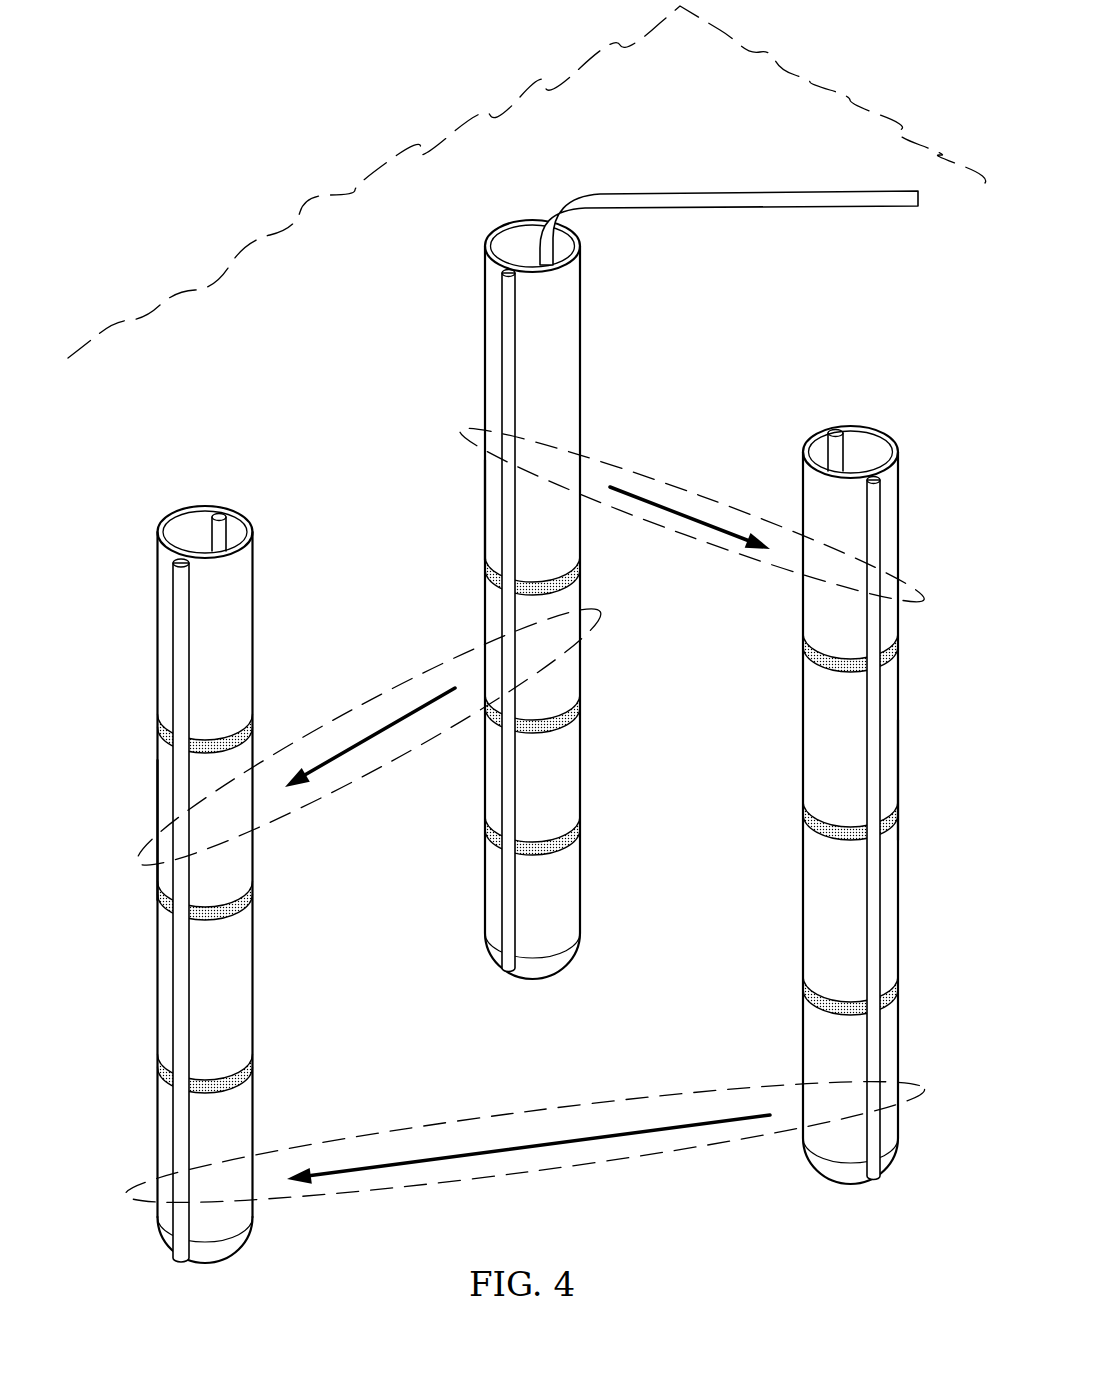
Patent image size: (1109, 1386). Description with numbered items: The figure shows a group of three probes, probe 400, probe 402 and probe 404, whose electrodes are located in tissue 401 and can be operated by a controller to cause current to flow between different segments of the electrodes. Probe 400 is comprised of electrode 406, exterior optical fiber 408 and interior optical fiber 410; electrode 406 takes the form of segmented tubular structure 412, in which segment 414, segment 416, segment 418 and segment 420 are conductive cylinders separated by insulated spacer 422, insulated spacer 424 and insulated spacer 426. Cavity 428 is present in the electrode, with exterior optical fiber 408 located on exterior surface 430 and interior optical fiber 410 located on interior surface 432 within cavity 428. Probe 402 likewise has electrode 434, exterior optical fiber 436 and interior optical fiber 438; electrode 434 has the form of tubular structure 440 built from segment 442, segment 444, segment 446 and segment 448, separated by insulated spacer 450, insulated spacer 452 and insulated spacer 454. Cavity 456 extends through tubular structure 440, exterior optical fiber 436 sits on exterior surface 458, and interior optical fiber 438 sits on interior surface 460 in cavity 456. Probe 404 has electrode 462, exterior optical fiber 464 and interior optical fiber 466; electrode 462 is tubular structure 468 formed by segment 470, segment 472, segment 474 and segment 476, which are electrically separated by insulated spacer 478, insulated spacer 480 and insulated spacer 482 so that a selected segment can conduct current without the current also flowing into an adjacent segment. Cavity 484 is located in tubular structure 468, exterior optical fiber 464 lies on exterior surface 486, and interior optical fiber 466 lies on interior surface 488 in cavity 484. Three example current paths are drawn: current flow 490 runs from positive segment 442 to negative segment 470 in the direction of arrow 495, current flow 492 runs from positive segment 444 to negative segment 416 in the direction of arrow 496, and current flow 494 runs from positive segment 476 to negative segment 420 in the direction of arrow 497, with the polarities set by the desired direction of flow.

The probe 400 is at (197, 845).
The tissue 401 is at (305, 218).
The probe 402 is at (658, 557).
The probe 404 is at (852, 763).
The electrode 406 is at (150, 986).
The exterior optical fiber 408 is at (180, 634).
The interior optical fiber 410 is at (218, 514).
The tubular structure 412 is at (165, 823).
The segment 414 is at (236, 682).
The segment 416 is at (236, 880).
The segment 418 is at (236, 1004).
The segment 420 is at (236, 1134).
The insulated spacer 422 is at (165, 755).
The insulated spacer 424 is at (238, 933).
The insulated spacer 426 is at (238, 1100).
The cavity 428 is at (194, 526).
The exterior surface 430 is at (245, 635).
The interior surface 432 is at (173, 535).
The electrode 434 is at (474, 504).
The exterior optical fiber 436 is at (507, 340).
The interior optical fiber 438 is at (625, 190).
The tubular structure 440 is at (500, 385).
The segment 442 is at (561, 396).
The segment 444 is at (563, 684).
The segment 446 is at (561, 787).
The segment 448 is at (561, 909).
The insulated spacer 450 is at (497, 592).
The insulated spacer 452 is at (558, 735).
The insulated spacer 454 is at (555, 858).
The cavity 456 is at (525, 240).
The exterior surface 458 is at (575, 340).
The interior surface 460 is at (492, 235).
The electrode 462 is at (908, 779).
The exterior optical fiber 464 is at (890, 547).
The interior optical fiber 466 is at (838, 433).
The tubular structure 468 is at (898, 710).
The segment 470 is at (822, 495).
The segment 472 is at (822, 746).
The segment 474 is at (822, 922).
The segment 476 is at (822, 1056).
The insulated spacer 478 is at (830, 678).
The insulated spacer 480 is at (830, 851).
The insulated spacer 482 is at (832, 1018).
The cavity 484 is at (860, 440).
The exterior surface 486 is at (810, 627).
The interior surface 488 is at (890, 445).
The current flow 490 is at (637, 465).
The current flow 492 is at (352, 790).
The current flow 494 is at (603, 1172).
The arrow 495 is at (690, 537).
The arrow 496 is at (372, 740).
The arrow 497 is at (495, 1150).